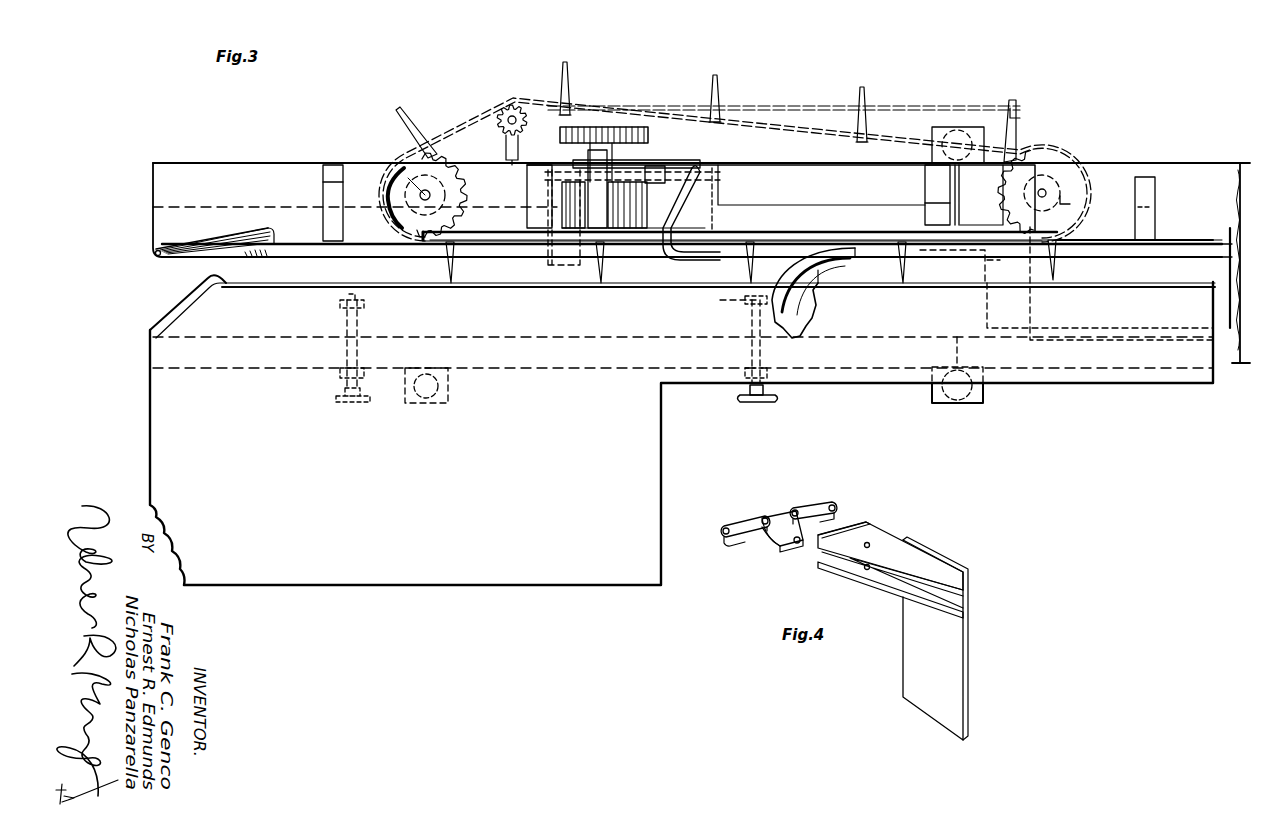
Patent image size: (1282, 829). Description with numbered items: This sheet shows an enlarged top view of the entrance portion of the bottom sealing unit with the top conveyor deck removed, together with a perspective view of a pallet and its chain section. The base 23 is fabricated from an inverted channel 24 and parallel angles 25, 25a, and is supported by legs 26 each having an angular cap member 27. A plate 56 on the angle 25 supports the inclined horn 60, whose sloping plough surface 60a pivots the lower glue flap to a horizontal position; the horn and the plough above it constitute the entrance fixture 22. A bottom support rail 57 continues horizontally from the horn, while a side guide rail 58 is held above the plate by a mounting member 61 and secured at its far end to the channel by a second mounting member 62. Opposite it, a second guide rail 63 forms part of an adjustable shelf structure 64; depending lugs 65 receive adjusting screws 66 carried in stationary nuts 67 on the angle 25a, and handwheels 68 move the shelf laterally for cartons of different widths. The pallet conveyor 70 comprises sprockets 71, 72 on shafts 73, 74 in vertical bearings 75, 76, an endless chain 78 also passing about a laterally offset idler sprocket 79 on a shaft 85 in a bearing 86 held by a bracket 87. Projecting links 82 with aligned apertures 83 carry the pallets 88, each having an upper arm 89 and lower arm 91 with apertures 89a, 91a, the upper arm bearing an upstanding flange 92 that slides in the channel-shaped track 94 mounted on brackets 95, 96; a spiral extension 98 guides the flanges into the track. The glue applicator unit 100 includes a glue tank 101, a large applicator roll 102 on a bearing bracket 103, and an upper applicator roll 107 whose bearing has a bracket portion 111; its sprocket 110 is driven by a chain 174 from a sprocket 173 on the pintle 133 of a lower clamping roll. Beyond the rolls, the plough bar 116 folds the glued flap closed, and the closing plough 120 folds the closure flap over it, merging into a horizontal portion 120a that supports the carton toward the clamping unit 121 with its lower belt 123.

In FIG. 3, the entrance fixture 22 is at (146, 280).
In FIG. 3, the base 23 is at (1228, 158).
In FIG. 3, the inverted channel 24 is at (1188, 165).
In FIG. 3, the angle 25 is at (153, 207).
In FIG. 3, the angle 25a is at (153, 366).
In FIG. 3, the legs 26 is at (952, 404).
In FIG. 3, the angular cap member 27 is at (985, 398).
In FIG. 3, the plate 56 is at (232, 172).
In FIG. 3, the bottom support rail 57 is at (312, 252).
In FIG. 3, the side guide rail 58 is at (302, 242).
In FIG. 3, the inclined horn 60 is at (152, 244).
In FIG. 3, the sloping plough surface 60a is at (215, 240).
In FIG. 3, the mounting member 61 is at (333, 166).
In FIG. 3, the second mounting member 62 is at (1143, 176).
In FIG. 3, the second guide rail 63 is at (200, 285).
In FIG. 3, the adjustable shelf structure 64 is at (385, 575).
In FIG. 3, the depending lugs 65 is at (365, 305).
In FIG. 3, the adjusting screws 66 is at (765, 390).
In FIG. 3, the stationary nuts 67 is at (340, 380).
In FIG. 3, the handwheels 68 is at (752, 404).
In FIG. 3, the pallet conveyor 70 is at (672, 80).
In FIG. 3, the sprocket 71 is at (448, 182).
In FIG. 3, the sprocket 72 is at (1050, 162).
In FIG. 3, the shaft 73 is at (410, 168).
In FIG. 3, the shaft 74 is at (1046, 192).
In FIG. 3, the vertical bearing 75 is at (410, 172).
In FIG. 3, the vertical bearing 76 is at (1072, 204).
In FIG. 3, the endless chain 78 is at (506, 118).
In FIG. 4, the endless chain 78 is at (822, 506).
In FIG. 3, the idler sprocket 79 is at (522, 108).
In FIG. 4, the projecting links 82 is at (786, 513).
In FIG. 4, the apertures 83 is at (790, 544).
In FIG. 3, the shaft 85 is at (500, 112).
In FIG. 3, the vertical bearing 86 is at (512, 104).
In FIG. 3, the bracket 87 is at (518, 152).
In FIG. 3, the pallet 88 is at (866, 96).
In FIG. 4, the pallet 88 is at (940, 556).
In FIG. 4, the upper arm 89 is at (910, 545).
In FIG. 4, the aperture 89a is at (870, 543).
In FIG. 4, the lower arm 91 is at (828, 568).
In FIG. 4, the aperture 91a is at (866, 571).
In FIG. 4, the upstanding flange 92 is at (866, 522).
In FIG. 3, the track 94 is at (830, 238).
In FIG. 3, the bracket 95 is at (527, 188).
In FIG. 3, the bracket 96 is at (925, 178).
In FIG. 3, the spiral extension 98 is at (388, 196).
In FIG. 3, the glue applicator unit 100 is at (614, 126).
In FIG. 3, the glue tank 101 is at (735, 185).
In FIG. 3, the applicator roll 102 is at (648, 174).
In FIG. 3, the bearing bracket 103 is at (626, 128).
In FIG. 3, the upper applicator roll 107 is at (622, 190).
In FIG. 3, the sprocket 110 is at (598, 116).
In FIG. 3, the bracket portion 111 is at (690, 160).
In FIG. 3, the plough bar 116 is at (705, 182).
In FIG. 3, the closing plough 120 is at (765, 292).
In FIG. 3, the horizontal portion 120a is at (829, 283).
In FIG. 3, the clamping unit 121 is at (1147, 390).
In FIG. 3, the lower belt 123 is at (1196, 278).
In FIG. 3, the pintle 133 is at (1012, 142).
In FIG. 3, the sprocket 173 is at (1020, 108).
In FIG. 3, the chain 174 is at (800, 110).